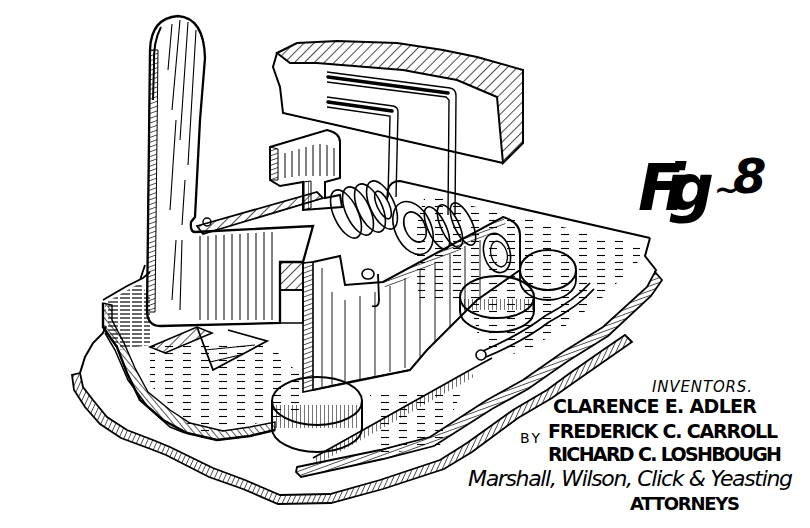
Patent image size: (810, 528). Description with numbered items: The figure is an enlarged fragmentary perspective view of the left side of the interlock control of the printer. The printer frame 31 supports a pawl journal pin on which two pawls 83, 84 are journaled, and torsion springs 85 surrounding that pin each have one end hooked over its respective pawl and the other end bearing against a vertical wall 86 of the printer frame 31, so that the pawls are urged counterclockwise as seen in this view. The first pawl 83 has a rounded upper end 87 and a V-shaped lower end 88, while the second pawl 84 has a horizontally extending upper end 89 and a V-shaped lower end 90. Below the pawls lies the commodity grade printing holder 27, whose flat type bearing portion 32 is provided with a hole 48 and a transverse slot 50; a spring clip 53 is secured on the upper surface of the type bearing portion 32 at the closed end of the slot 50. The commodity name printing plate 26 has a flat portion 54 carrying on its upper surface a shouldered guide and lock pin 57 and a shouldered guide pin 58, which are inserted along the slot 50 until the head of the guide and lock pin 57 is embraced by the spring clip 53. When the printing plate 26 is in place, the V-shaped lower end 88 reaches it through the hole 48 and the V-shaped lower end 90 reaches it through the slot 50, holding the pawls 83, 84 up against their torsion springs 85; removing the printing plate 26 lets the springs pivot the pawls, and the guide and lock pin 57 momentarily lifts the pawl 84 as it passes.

The commodity name printing plate 26 is at (103, 430).
The commodity grade printing holder 27 is at (660, 267).
The printer frame 31 is at (424, 40).
The type bearing portion 32 is at (541, 228).
The hole 48 is at (282, 323).
The slot 50 is at (452, 363).
The spring clip 53 is at (586, 285).
The flat portion 54 is at (108, 386).
The guide and lock pin 57 is at (507, 281).
The guide pin 58 is at (300, 444).
The pawl 83 is at (264, 258).
The pawl 84 is at (422, 328).
The torsion spring 85 is at (447, 164).
The vertical wall 86 is at (288, 87).
The rounded upper end 87 is at (150, 54).
The V-shaped lower end 88 is at (213, 368).
The horizontally extending upper end 89 is at (284, 150).
The V-shaped lower end 90 is at (376, 372).